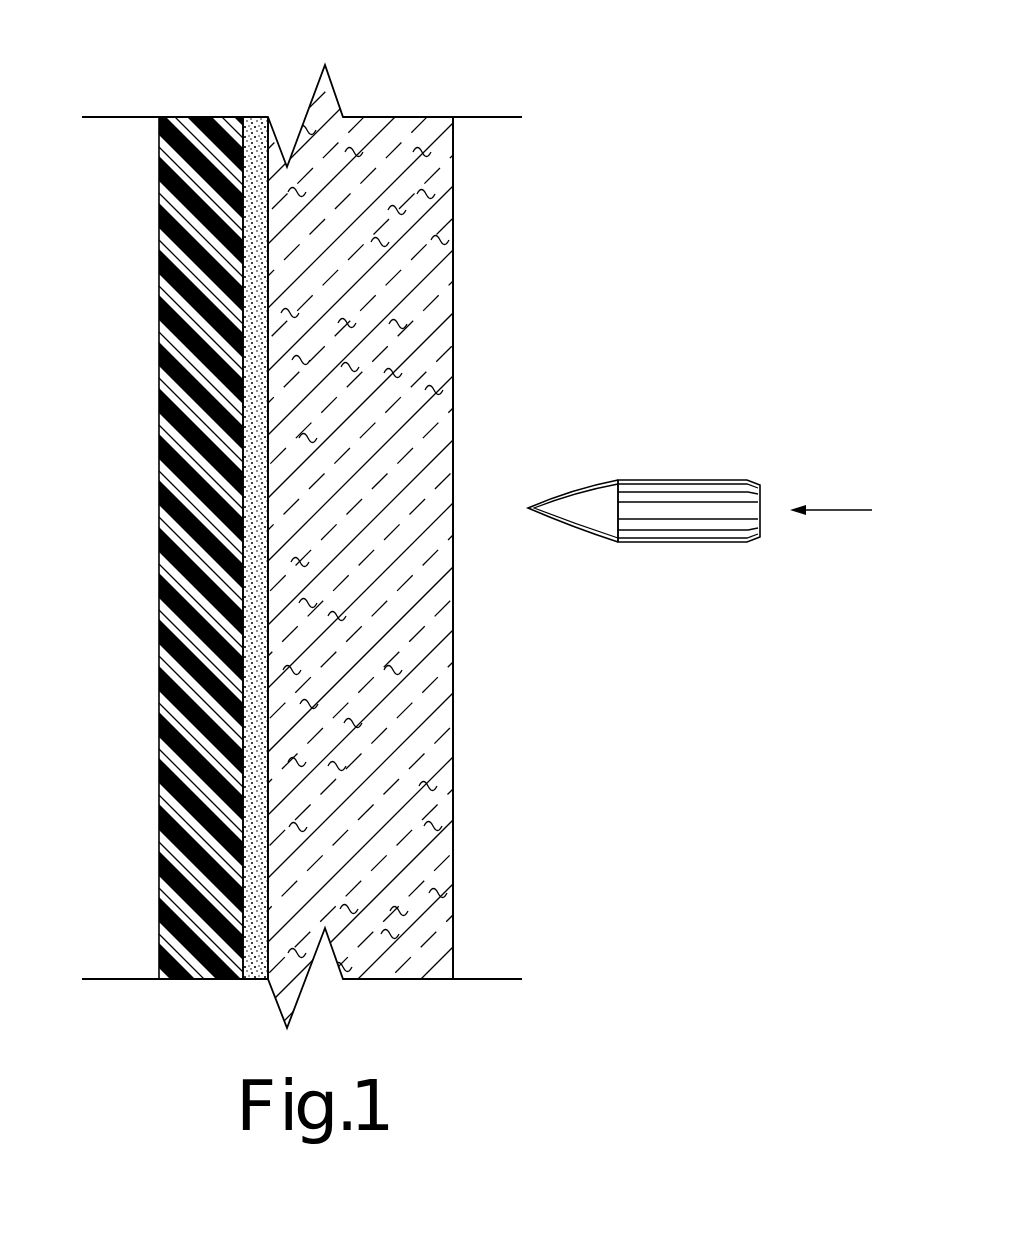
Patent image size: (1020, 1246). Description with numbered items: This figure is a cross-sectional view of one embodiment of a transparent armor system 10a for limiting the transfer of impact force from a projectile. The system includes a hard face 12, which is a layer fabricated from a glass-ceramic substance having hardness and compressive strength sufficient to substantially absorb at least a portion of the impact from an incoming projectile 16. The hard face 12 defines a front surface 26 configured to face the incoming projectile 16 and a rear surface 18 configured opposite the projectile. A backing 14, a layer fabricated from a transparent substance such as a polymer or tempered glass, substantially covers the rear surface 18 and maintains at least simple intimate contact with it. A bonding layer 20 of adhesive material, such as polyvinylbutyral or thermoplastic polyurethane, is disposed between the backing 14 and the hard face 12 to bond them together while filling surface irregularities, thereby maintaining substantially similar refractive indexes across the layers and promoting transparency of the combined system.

The transparent armor system 10a is at (588, 199).
The hard face 12 is at (403, 117).
The backing 14 is at (196, 117).
The incoming projectile 16 is at (682, 478).
The rear surface 18 is at (250, 117).
The bonding layer 20 is at (263, 973).
The front surface 26 is at (453, 265).